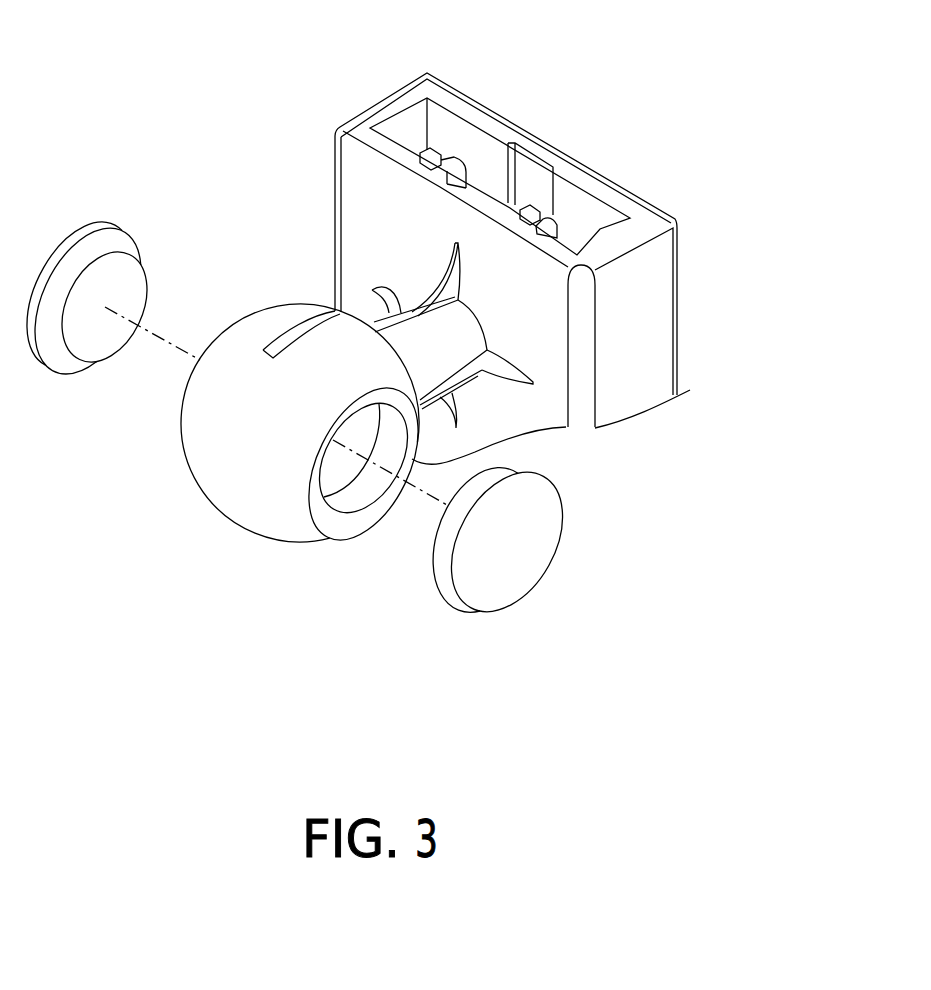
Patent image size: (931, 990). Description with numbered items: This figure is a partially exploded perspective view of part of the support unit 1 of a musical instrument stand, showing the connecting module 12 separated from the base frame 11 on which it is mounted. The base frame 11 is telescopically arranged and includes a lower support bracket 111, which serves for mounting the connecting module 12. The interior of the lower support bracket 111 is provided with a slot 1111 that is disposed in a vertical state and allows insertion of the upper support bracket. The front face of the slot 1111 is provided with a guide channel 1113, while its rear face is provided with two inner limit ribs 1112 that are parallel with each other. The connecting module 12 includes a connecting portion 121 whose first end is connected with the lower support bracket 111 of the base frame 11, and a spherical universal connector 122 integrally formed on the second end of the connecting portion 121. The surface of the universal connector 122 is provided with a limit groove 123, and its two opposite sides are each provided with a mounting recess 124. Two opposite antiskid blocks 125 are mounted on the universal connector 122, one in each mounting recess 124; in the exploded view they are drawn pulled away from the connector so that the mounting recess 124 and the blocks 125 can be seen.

The support unit 1 is at (373, 356).
The base frame 11 is at (527, 232).
The lower support bracket 111 is at (665, 282).
The slot 1111 is at (470, 122).
The inner limit ribs 1112 is at (436, 157).
The guide channel 1113 is at (534, 156).
The connecting module 12 is at (306, 415).
The connecting portion 121 is at (423, 337).
The spherical universal connector 122 is at (228, 363).
The limit groove 123 is at (288, 328).
The mounting recess 124 is at (357, 497).
The antiskid blocks 125 is at (97, 350).